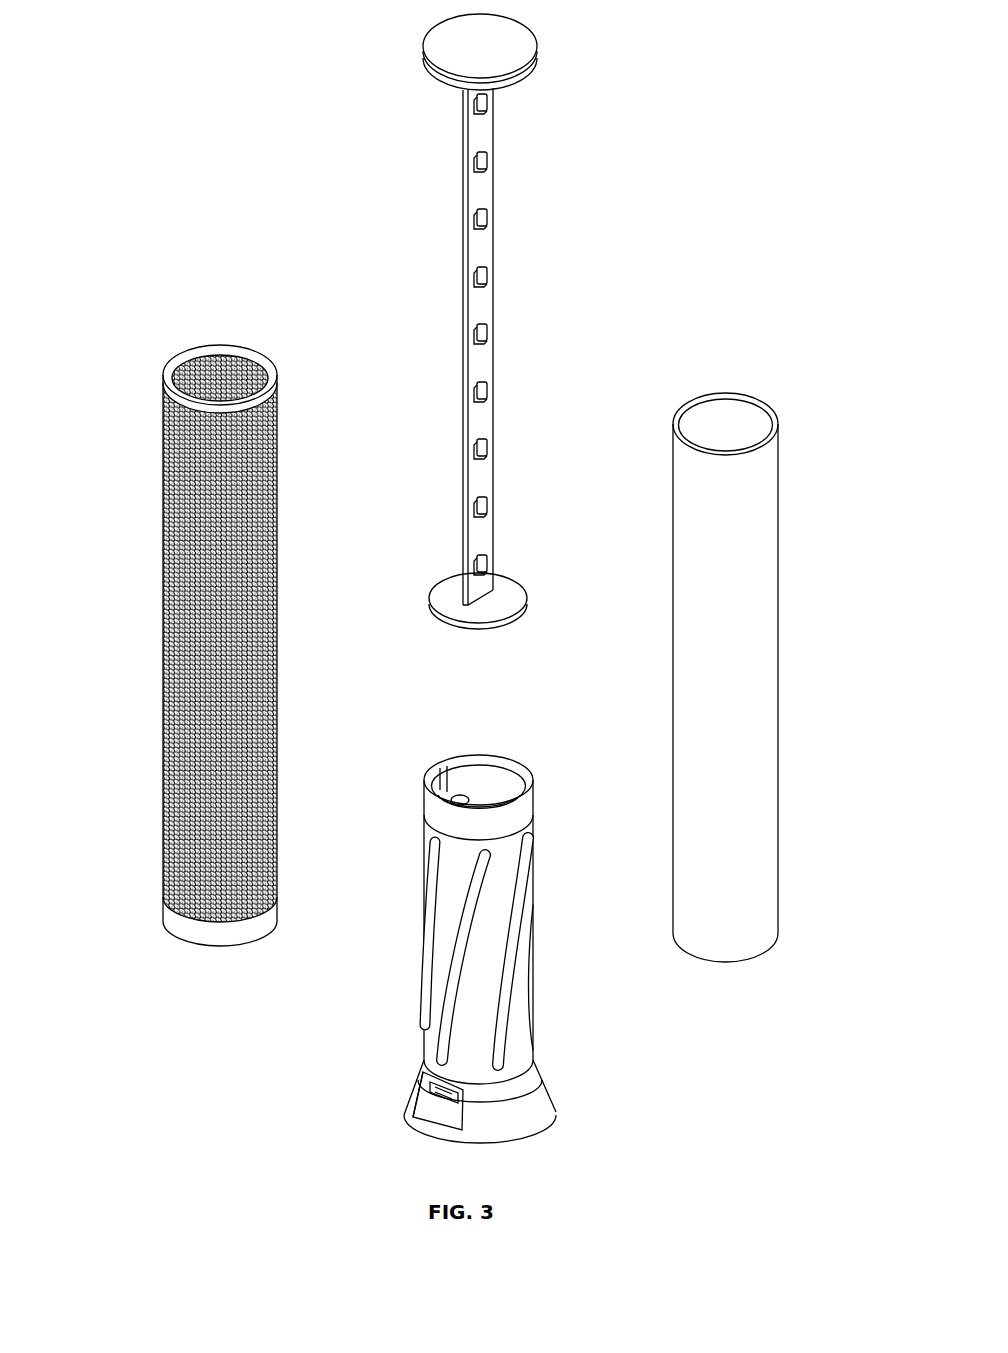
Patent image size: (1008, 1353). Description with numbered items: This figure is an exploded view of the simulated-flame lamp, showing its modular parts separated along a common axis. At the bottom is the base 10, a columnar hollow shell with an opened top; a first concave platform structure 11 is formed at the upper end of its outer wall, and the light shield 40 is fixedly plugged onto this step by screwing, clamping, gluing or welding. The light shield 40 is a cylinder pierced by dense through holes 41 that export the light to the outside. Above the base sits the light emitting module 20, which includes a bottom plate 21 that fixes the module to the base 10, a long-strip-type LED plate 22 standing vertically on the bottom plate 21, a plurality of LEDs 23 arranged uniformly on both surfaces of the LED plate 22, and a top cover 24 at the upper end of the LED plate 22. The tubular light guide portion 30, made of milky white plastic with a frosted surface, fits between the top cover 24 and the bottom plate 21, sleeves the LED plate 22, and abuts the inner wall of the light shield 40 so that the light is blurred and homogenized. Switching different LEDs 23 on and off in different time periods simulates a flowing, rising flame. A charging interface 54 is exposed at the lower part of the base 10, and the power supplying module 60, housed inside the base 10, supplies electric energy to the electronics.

The base 10 is at (472, 949).
The first concave platform structure 11 is at (481, 826).
The light emitting module 20 is at (491, 321).
The bottom plate 21 is at (492, 598).
The LED plate 22 is at (484, 548).
The LED 23 is at (486, 508).
The top cover 24 is at (483, 60).
The light guide portion 30 is at (722, 686).
The light shield 40 is at (173, 646).
The through hole 41 is at (218, 547).
The charging interface 54 is at (430, 1091).
The power supplying module 60 is at (470, 806).